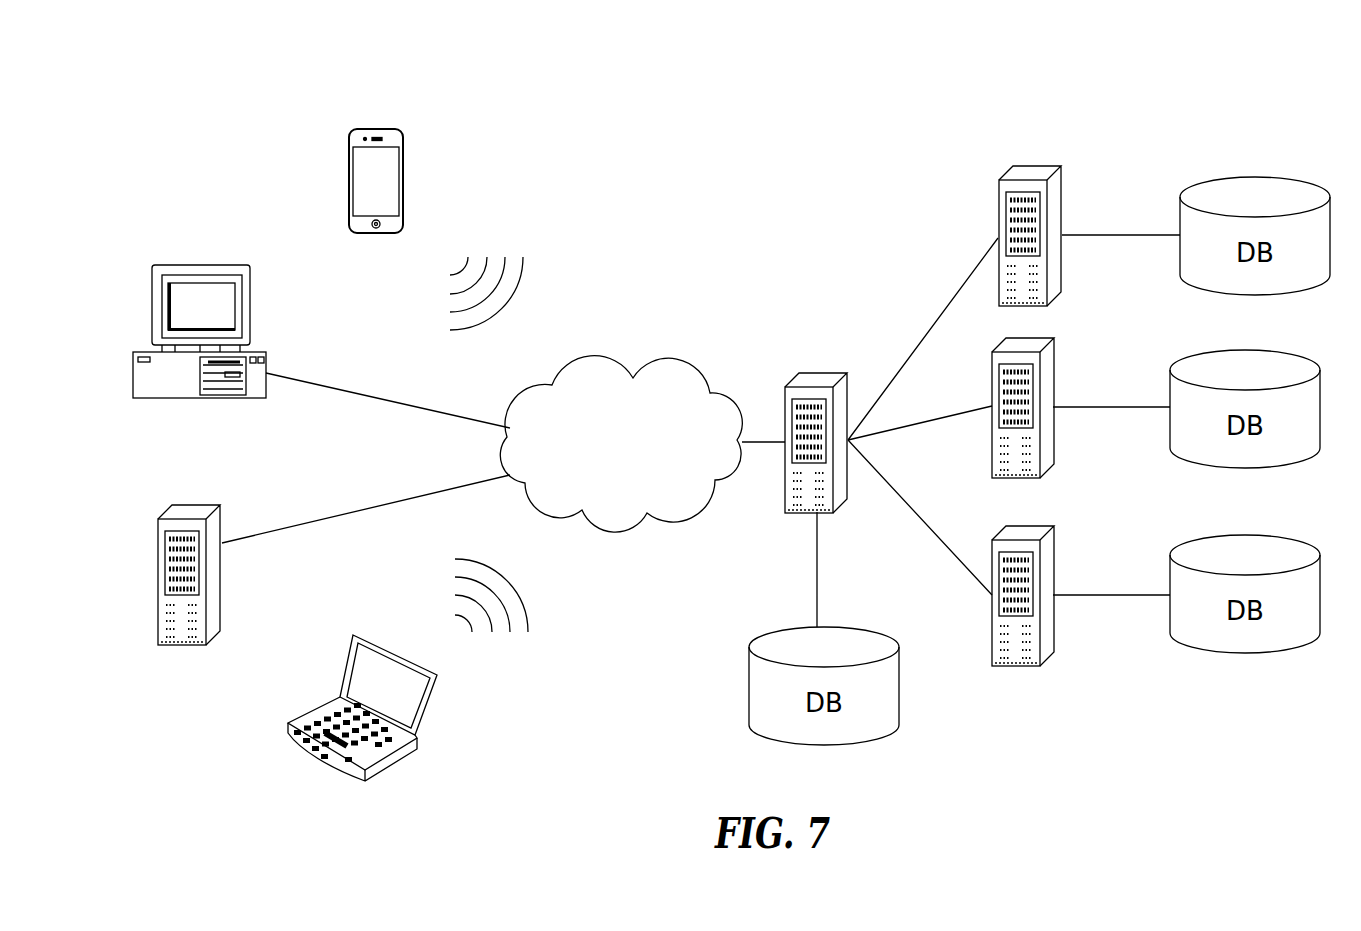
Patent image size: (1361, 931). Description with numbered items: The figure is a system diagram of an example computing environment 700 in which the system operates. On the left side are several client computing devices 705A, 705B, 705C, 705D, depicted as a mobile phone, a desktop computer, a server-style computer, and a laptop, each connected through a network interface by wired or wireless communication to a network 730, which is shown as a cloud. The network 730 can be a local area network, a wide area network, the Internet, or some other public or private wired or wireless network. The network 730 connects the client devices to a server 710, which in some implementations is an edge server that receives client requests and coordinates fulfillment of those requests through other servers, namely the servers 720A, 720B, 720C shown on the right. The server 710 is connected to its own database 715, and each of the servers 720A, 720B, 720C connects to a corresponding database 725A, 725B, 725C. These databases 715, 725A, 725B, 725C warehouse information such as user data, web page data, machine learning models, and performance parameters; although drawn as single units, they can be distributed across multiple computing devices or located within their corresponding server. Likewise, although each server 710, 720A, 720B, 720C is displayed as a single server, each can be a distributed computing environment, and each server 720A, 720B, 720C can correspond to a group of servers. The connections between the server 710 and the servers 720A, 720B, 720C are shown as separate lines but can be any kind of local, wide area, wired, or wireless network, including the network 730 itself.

The computing environment 700 is at (262, 99).
The client computing device 705A is at (392, 128).
The client computing device 705B is at (243, 264).
The client computing device 705C is at (213, 505).
The client computing device 705D is at (430, 708).
The server 710 is at (827, 373).
The database 715 is at (878, 631).
The server 720A is at (1062, 165).
The server 720B is at (1053, 338).
The server 720C is at (1053, 525).
The database 725A is at (1255, 177).
The database 725B is at (1245, 350).
The database 725C is at (1243, 535).
The network 730 is at (690, 367).